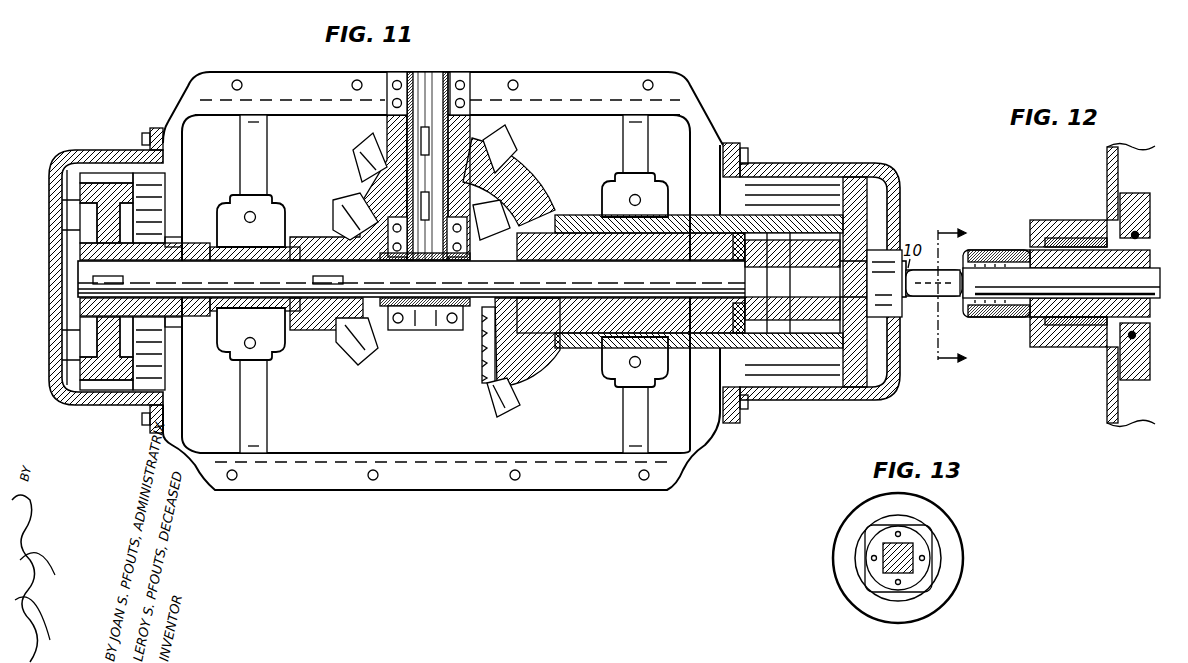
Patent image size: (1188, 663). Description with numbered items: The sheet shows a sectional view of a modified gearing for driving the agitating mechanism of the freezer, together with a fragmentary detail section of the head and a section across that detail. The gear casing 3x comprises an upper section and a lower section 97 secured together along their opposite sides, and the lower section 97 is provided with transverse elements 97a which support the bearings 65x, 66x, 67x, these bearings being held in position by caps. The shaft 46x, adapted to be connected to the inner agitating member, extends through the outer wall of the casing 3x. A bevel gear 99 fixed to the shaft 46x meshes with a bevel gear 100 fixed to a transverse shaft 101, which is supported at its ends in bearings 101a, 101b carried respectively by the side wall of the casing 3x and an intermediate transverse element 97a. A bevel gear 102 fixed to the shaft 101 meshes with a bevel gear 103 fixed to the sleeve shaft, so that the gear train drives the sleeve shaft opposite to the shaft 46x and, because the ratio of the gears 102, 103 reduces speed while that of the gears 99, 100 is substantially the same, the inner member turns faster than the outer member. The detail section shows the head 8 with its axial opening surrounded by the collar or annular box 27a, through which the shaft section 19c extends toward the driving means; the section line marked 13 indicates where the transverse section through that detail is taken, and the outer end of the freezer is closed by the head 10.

In FIG. 11, the gear casing 3x is at (443, 283).
In FIG. 12, the head 8 is at (1106, 168).
In FIG. 11, the head 10 is at (49, 283).
In FIG. 12, the head 10 is at (931, 269).
In FIG. 12, the valve 13 is at (950, 297).
In FIG. 12, the shaft section 19c is at (1061, 283).
In FIG. 12, the collar or annular box 27a is at (1086, 222).
In FIG. 11, the shaft 46x is at (492, 279).
In FIG. 11, the bearing 65x is at (248, 258).
In FIG. 11, the bearing 66x is at (421, 310).
In FIG. 11, the bearing 67x is at (604, 352).
In FIG. 11, the lower section 97 is at (190, 442).
In FIG. 11, the transverse elements 97a is at (258, 401).
In FIG. 11, the bevel gear 99 is at (350, 355).
In FIG. 11, the bevel gear 100 is at (365, 195).
In FIG. 11, the transverse shaft 101 is at (440, 150).
In FIG. 11, the bearing 101a is at (446, 74).
In FIG. 11, the bearing 101b is at (420, 200).
In FIG. 11, the bevel gear 102 is at (355, 156).
In FIG. 11, the bevel gear 103 is at (487, 392).